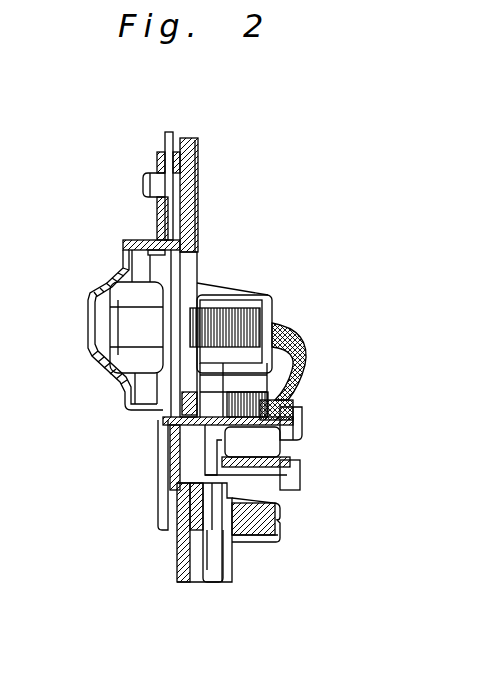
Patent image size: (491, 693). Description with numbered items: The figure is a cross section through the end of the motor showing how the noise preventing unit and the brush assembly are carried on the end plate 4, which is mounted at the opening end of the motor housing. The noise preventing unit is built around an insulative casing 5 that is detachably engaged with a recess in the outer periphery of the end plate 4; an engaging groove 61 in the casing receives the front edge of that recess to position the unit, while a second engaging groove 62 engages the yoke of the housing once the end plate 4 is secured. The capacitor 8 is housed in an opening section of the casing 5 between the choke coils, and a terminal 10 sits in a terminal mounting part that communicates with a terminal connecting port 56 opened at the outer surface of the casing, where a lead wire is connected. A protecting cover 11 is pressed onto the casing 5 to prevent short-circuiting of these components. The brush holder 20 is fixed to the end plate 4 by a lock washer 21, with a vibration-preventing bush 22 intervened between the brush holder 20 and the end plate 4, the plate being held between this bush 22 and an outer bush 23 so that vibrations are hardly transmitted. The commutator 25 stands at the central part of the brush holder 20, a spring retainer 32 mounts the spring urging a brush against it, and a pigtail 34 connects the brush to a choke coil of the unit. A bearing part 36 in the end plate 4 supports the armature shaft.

The end plate 4 is at (125, 243).
The casing 5 is at (160, 525).
The capacitor 8 is at (262, 445).
The terminal 10 is at (180, 552).
The protecting cover 11 is at (173, 440).
The brush holder 20 is at (198, 163).
The lock washer 21 is at (143, 183).
The bush 22 is at (157, 160).
The outer bush 23 is at (164, 152).
The commutator 25 is at (240, 285).
The spring retainer 32 is at (292, 425).
The pigtail 34 is at (305, 372).
The bearing part 36 is at (122, 298).
The terminal connecting port 56 is at (213, 575).
The engaging groove 61 is at (160, 423).
The engaging groove 62 is at (285, 530).